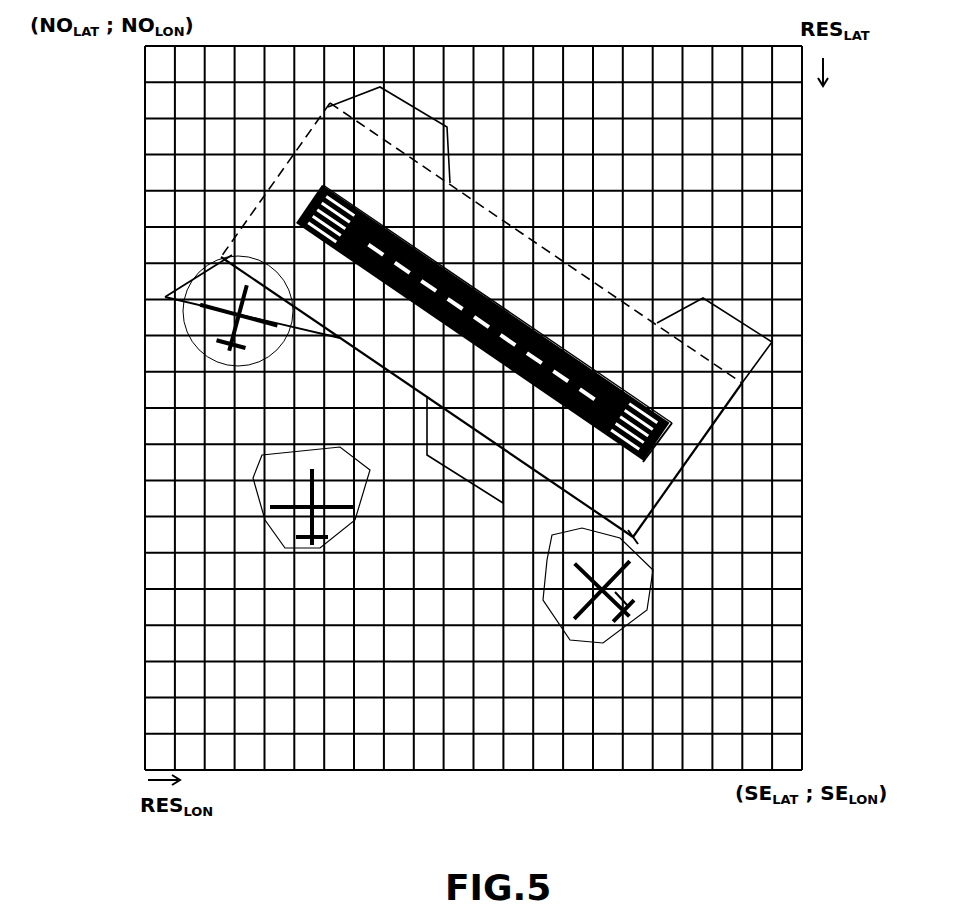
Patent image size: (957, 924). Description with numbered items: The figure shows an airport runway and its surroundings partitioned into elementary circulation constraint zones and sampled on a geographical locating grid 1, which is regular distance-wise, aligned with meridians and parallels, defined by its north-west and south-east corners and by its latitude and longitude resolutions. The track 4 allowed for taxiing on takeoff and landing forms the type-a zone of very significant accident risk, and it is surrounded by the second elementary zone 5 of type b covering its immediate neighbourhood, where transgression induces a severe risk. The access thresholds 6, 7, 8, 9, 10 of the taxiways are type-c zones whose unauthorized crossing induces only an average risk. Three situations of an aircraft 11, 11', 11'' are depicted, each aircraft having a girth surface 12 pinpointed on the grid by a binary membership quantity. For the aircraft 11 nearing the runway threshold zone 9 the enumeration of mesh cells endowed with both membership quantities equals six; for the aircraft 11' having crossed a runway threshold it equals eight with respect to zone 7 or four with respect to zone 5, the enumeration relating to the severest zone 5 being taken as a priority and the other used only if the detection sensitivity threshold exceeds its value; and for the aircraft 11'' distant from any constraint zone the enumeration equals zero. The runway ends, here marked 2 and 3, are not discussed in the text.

The geographical locating grid 1 is at (463, 47).
The runway 2 is at (327, 185).
The runway threshold 3 is at (645, 412).
The track 4 is at (490, 300).
The second elementary zone 5 is at (298, 175).
The access threshold 6 is at (395, 110).
The access threshold 7 is at (290, 347).
The access threshold 8 is at (470, 455).
The access threshold 9 is at (633, 537).
The access threshold 10 is at (733, 352).
The aircraft 11 is at (600, 668).
The aircraft 11' is at (231, 497).
The aircraft 11'' is at (191, 309).
The girth surface 12 is at (622, 600).